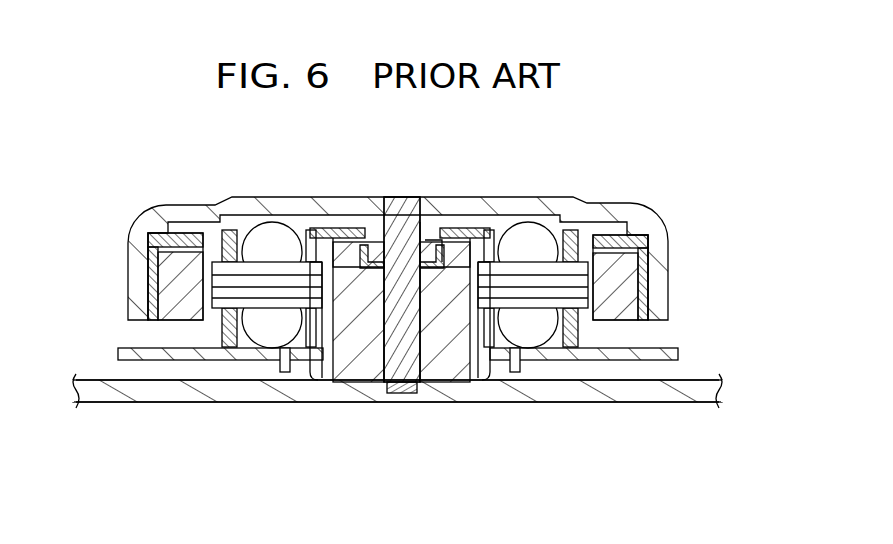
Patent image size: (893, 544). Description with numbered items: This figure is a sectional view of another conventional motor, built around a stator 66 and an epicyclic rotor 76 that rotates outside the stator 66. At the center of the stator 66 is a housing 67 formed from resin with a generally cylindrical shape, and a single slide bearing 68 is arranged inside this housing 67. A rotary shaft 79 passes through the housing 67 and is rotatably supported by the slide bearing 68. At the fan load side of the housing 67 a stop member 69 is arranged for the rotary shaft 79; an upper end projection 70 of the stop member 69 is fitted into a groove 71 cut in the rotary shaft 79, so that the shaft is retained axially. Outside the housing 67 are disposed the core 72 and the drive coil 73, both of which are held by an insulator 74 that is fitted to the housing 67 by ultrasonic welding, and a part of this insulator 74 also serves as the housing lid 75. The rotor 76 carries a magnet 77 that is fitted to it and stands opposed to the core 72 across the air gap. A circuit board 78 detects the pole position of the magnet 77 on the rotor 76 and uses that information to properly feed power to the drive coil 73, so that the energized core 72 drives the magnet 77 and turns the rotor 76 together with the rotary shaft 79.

The stator 66 is at (598, 362).
The housing 67 is at (479, 352).
The slide bearing 68 is at (444, 392).
The stop member 69 is at (433, 222).
The upper end projection 70 is at (421, 252).
The groove 71 is at (418, 250).
The core 72 is at (519, 270).
The drive coil 73 is at (537, 342).
The insulator 74 is at (578, 247).
The housing lid 75 is at (428, 246).
The rotor 76 is at (657, 276).
The magnet 77 is at (170, 284).
The circuit board 78 is at (658, 360).
The rotary shaft 79 is at (388, 393).